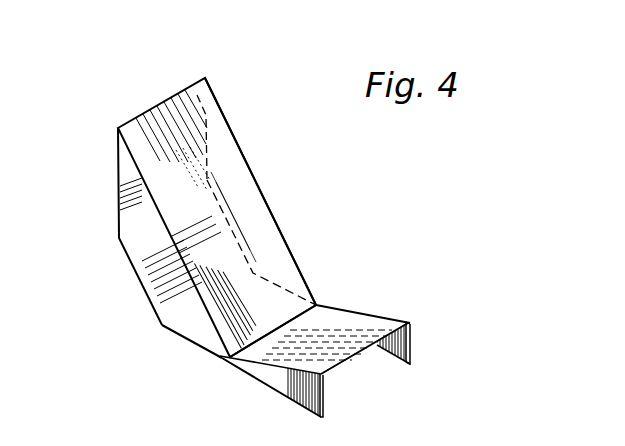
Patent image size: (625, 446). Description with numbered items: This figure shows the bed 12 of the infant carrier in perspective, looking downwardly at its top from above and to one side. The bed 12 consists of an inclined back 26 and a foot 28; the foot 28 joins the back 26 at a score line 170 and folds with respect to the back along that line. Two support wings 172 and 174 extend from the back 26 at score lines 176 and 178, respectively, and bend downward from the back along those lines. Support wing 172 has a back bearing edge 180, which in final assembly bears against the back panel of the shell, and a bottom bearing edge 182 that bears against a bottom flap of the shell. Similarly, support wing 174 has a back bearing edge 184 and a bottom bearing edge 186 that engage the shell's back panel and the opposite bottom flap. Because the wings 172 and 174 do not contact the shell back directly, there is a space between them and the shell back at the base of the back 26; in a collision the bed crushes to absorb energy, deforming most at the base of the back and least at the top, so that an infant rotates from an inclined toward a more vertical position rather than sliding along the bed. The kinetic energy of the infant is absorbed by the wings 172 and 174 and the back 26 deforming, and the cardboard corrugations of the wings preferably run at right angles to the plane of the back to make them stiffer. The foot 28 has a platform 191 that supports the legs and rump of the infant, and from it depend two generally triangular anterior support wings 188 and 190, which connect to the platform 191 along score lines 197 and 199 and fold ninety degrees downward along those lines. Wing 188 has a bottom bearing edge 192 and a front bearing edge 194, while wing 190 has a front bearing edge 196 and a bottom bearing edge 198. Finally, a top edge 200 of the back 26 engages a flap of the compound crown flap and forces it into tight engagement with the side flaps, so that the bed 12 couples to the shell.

The bed 12 is at (263, 159).
The back 26 is at (221, 112).
The foot 28 is at (348, 313).
The score line 170 is at (320, 305).
The support wing 172 is at (148, 277).
The support wing 174 is at (208, 178).
The score line 176 is at (170, 240).
The score line 178 is at (270, 208).
The back bearing edge 180 is at (120, 190).
The bottom bearing edge 182 is at (188, 340).
The back bearing edge 184 is at (196, 92).
The bottom bearing edge 186 is at (268, 285).
The anterior support wing 188 is at (283, 382).
The anterior support wing 190 is at (412, 340).
The platform 191 is at (362, 353).
The bottom bearing edge 192 is at (303, 407).
The front bearing edge 194 is at (325, 397).
The front bearing edge 196 is at (413, 357).
The score line 197 is at (268, 358).
The bottom bearing edge 198 is at (388, 355).
The score line 199 is at (401, 320).
The top edge 200 is at (160, 104).